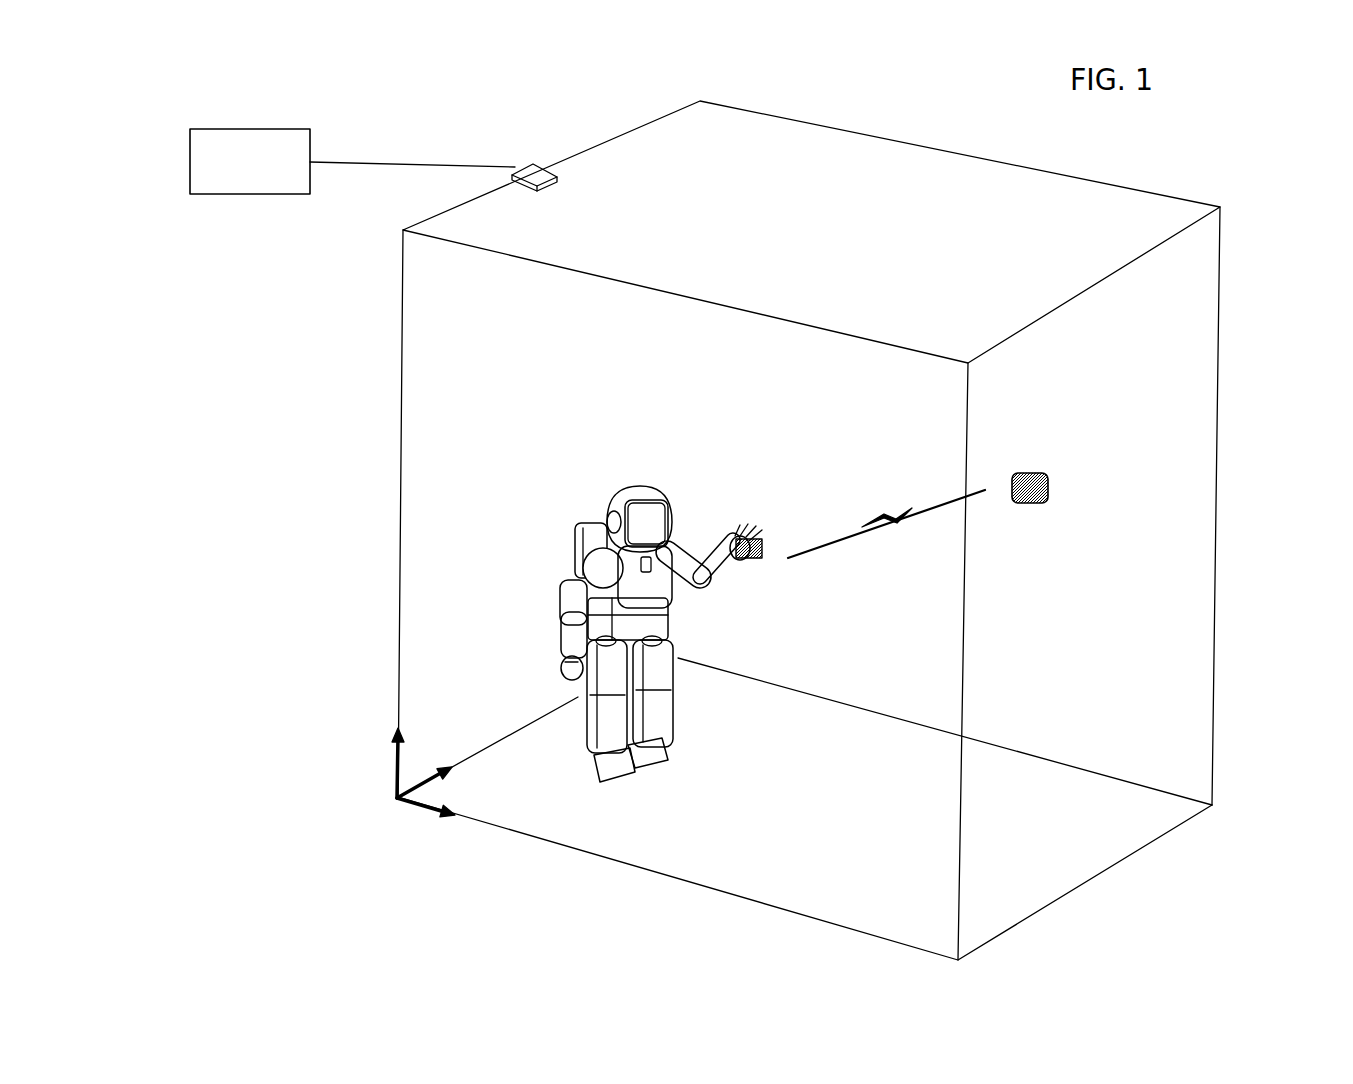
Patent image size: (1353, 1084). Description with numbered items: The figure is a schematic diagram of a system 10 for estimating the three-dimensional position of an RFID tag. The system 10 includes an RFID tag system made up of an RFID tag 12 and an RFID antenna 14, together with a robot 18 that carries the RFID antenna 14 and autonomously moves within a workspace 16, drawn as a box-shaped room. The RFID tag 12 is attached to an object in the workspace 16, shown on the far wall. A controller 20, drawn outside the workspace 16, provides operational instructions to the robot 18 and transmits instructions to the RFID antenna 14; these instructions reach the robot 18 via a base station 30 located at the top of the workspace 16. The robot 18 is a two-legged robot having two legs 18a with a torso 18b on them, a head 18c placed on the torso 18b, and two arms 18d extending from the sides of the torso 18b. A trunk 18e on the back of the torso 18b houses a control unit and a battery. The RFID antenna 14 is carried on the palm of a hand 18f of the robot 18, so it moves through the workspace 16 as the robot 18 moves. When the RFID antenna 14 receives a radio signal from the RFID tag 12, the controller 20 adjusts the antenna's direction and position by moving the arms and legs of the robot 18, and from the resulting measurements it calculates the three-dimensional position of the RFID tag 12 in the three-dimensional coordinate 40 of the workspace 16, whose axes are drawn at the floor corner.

The system 10 is at (371, 65).
The RFID tag 12 is at (1032, 503).
The RFID antenna 14 is at (757, 560).
The workspace 16 is at (1219, 416).
The robot 18 is at (629, 611).
The legs 18a is at (655, 703).
The torso 18b is at (650, 613).
The head 18c is at (663, 502).
The arms 18d is at (568, 623).
The trunk 18e is at (587, 530).
The hand 18f is at (563, 670).
The controller 20 is at (190, 158).
The base station 30 is at (532, 167).
The three-dimensional coordinate 40 is at (385, 762).